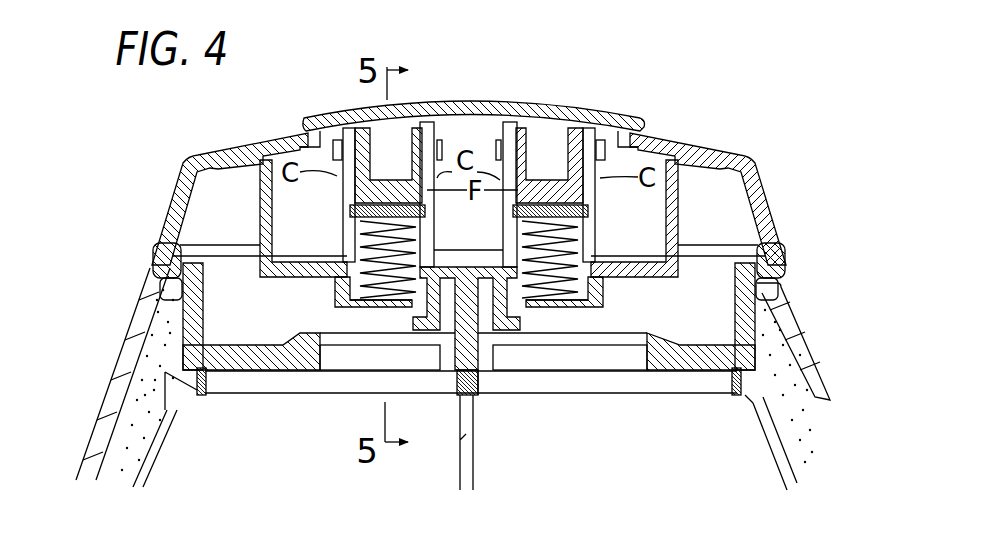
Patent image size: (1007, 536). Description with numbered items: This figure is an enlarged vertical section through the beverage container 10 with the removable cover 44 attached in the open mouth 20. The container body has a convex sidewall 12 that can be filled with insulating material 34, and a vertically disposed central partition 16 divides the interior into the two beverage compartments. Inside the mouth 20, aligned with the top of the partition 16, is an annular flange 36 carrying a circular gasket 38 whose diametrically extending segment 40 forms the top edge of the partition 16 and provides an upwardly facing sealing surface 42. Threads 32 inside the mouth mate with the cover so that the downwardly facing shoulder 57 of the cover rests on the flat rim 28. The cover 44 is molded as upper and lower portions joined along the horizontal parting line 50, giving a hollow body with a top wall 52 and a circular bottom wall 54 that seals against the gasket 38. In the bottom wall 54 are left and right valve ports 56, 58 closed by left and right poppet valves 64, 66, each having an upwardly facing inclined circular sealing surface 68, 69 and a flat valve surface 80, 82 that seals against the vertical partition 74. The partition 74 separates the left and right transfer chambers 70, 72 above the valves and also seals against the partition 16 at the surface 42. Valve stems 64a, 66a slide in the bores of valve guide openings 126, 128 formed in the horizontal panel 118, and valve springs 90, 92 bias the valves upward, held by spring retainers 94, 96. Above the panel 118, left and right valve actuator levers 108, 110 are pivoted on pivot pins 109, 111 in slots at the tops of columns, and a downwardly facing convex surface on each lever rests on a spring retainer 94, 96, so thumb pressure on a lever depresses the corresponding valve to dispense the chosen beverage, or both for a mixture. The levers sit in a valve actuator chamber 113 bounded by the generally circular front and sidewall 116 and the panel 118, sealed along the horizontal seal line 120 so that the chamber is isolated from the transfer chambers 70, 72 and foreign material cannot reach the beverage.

The beverage container 10 is at (67, 468).
The convex sidewall 12 is at (92, 430).
The central partition 16 is at (473, 468).
The open mouth 20 is at (170, 287).
The rim 28 is at (157, 259).
The threads 32 is at (175, 357).
The insulating material 34 is at (125, 458).
The annular flange 36 is at (203, 395).
The circular gasket 38 is at (613, 395).
The diametrically extending segment 40 is at (457, 380).
The upwardly facing sealing surface 42 is at (485, 350).
The removable cover 44 is at (245, 140).
The parting line 50 is at (217, 243).
The top wall 52 is at (602, 116).
The circular bottom wall 54 is at (715, 373).
The left valve port 56 is at (245, 362).
The downwardly facing shoulder 57 is at (153, 275).
The right valve port 58 is at (680, 373).
The left poppet valve 64 is at (310, 350).
The valve stem 64a is at (340, 347).
The right poppet valve 66 is at (552, 347).
The valve stem 66a is at (503, 395).
The inclined circular sealing surface 68 is at (273, 345).
The inclined circular sealing surface 69 is at (757, 330).
The left transfer chamber 70 is at (234, 305).
The right transfer chamber 72 is at (627, 313).
The vertical partition 74 is at (440, 330).
The flat valve surface 80 is at (420, 292).
The flat valve surface 82 is at (467, 330).
The valve spring 90 is at (363, 248).
The valve spring 92 is at (588, 233).
The spring retainer 94 is at (350, 210).
The spring retainer 96 is at (590, 205).
The left valve actuator lever 108 is at (385, 180).
The pivot pin 109 is at (320, 130).
The right valve actuator lever 110 is at (552, 182).
The pivot pin 111 is at (458, 143).
The valve actuator chamber 113 is at (663, 192).
The front and sidewall 116 is at (248, 149).
The horizontal panel 118 is at (647, 278).
The horizontal seal line 120 is at (658, 252).
The valve guide opening 126 is at (360, 317).
The valve guide opening 128 is at (587, 322).